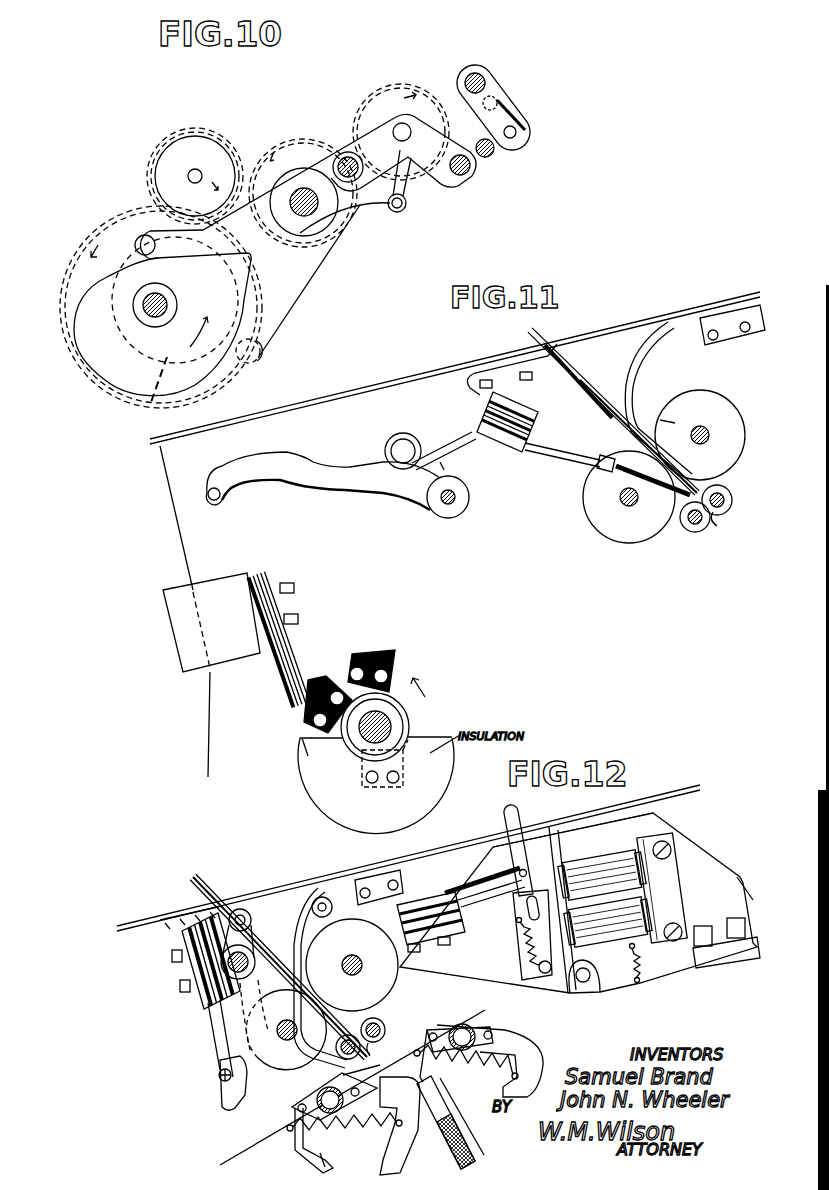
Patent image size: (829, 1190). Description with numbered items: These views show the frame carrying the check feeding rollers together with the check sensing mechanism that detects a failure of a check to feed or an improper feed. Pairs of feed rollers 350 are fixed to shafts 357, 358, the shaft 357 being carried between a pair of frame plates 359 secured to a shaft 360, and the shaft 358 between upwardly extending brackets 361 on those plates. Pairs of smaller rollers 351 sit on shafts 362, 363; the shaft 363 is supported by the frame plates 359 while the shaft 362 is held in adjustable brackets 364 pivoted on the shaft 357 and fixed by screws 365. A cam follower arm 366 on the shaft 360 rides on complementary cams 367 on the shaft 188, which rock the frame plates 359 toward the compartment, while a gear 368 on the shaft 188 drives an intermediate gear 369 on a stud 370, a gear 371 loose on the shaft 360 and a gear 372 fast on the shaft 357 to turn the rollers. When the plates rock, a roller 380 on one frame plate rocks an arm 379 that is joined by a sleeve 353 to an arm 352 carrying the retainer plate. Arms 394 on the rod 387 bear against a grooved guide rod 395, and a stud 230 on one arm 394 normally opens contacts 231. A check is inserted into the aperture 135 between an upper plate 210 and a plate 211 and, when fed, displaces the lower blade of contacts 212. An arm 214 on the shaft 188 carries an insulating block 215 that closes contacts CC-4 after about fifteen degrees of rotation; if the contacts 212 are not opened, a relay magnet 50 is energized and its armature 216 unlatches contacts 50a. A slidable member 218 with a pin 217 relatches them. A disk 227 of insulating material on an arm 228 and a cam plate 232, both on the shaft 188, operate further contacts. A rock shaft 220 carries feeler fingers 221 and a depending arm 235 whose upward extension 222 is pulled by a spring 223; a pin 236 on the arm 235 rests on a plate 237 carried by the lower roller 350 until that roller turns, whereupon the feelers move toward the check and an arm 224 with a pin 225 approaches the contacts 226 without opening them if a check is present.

In FIG. 12, the relay magnet 50 is at (593, 858).
In FIG. 12, the contacts 50a is at (505, 918).
In FIG. 11, the check feeding aperture 135 is at (612, 400).
In FIG. 12, the check feeding aperture 135 is at (282, 953).
In FIG. 10, the shaft 188 is at (143, 313).
In FIG. 11, the shaft 188 is at (390, 720).
In FIG. 11, the upper plate 210 is at (640, 360).
In FIG. 12, the upper plate 210 is at (300, 910).
In FIG. 11, the plate 211 is at (615, 403).
In FIG. 12, the plate 211 is at (260, 912).
In FIG. 11, the set of contacts 212 is at (597, 476).
In FIG. 11, the arm 214 is at (307, 742).
In FIG. 11, the block of insulating material 215 is at (320, 679).
In FIG. 12, the armature 216 is at (542, 866).
In FIG. 12, the pin 217 is at (520, 874).
In FIG. 12, the slidable member 218 is at (510, 824).
In FIG. 12, the rock shaft 220 is at (257, 890).
In FIG. 12, the feeler fingers 221 is at (357, 1070).
In FIG. 12, the upward extension 222 is at (230, 918).
In FIG. 12, the spring 223 is at (222, 923).
In FIG. 12, the arm 224 is at (217, 1060).
In FIG. 12, the pin 225 is at (218, 1076).
In FIG. 12, the set of contacts 226 is at (213, 1033).
In FIG. 11, the disk of insulating material 227 is at (323, 773).
In FIG. 11, the arm 228 is at (405, 763).
In FIG. 11, the stud 230 is at (216, 500).
In FIG. 11, the contacts 231 is at (450, 462).
In FIG. 11, the cam plate 232 is at (393, 656).
In FIG. 12, the depending arm 235 is at (230, 1096).
In FIG. 12, the pin 236 is at (200, 1010).
In FIG. 12, the plate 237 is at (267, 1050).
In FIG. 11, the feed rollers 350 is at (662, 420).
In FIG. 12, the feed rollers 350 is at (345, 933).
In FIG. 11, the smaller rollers 351 is at (710, 524).
In FIG. 12, the smaller rollers 351 is at (384, 1030).
In FIG. 12, the arm 352 is at (387, 1160).
In FIG. 12, the sleeve 353 is at (335, 1118).
In FIG. 10, the shaft 357 is at (411, 132).
In FIG. 11, the shaft 357 is at (626, 504).
In FIG. 12, the shaft 357 is at (190, 987).
In FIG. 10, the shaft 358 is at (486, 82).
In FIG. 11, the shaft 358 is at (705, 430).
In FIG. 12, the shaft 358 is at (362, 965).
In FIG. 10, the frame plates 359 is at (347, 183).
In FIG. 10, the shaft 360 is at (311, 216).
In FIG. 10, the brackets 361 is at (494, 88).
In FIG. 10, the shaft 362 is at (468, 178).
In FIG. 11, the shaft 362 is at (690, 523).
In FIG. 12, the shaft 362 is at (350, 1035).
In FIG. 10, the shaft 363 is at (491, 158).
In FIG. 11, the shaft 363 is at (722, 492).
In FIG. 12, the shaft 363 is at (381, 1024).
In FIG. 10, the adjustable brackets 364 is at (383, 152).
In FIG. 10, the screws 365 is at (358, 206).
In FIG. 10, the cam follower arm 366 is at (278, 319).
In FIG. 10, the complementary cams 367 is at (142, 372).
In FIG. 10, the gear 368 is at (103, 228).
In FIG. 10, the intermediate gear 369 is at (151, 170).
In FIG. 10, the stud 370 is at (197, 171).
In FIG. 10, the gear 371 is at (284, 137).
In FIG. 10, the gear 372 is at (418, 95).
In FIG. 12, the arm 379 is at (273, 1136).
In FIG. 10, the roller 380 is at (408, 208).
In FIG. 11, the rod 387 is at (427, 502).
In FIG. 11, the arms 394 is at (268, 472).
In FIG. 11, the guide rod 395 is at (406, 433).
In FIG. 11, the contacts CC-4 is at (297, 713).